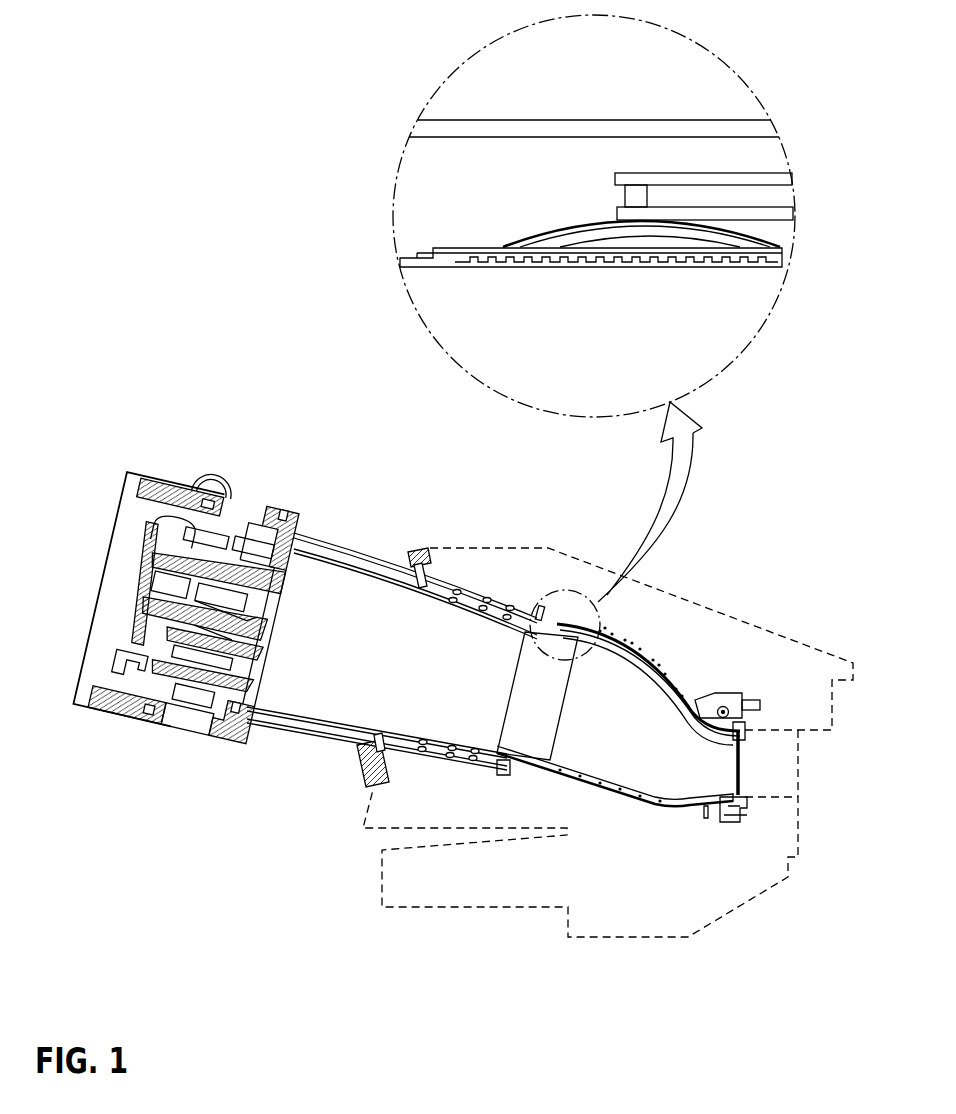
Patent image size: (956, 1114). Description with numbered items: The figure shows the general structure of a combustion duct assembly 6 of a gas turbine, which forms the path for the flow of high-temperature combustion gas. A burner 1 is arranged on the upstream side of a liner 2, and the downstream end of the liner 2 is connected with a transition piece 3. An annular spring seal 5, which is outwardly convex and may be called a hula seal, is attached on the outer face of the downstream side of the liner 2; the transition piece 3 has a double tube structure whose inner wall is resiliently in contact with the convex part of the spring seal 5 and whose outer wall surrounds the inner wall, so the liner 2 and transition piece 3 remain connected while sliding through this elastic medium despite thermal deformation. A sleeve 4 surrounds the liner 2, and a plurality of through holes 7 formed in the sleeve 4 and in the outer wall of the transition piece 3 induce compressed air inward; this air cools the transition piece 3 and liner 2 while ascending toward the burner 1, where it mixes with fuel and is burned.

The burner 1 is at (252, 505).
The liner 2 is at (374, 565).
The transition piece 3 is at (556, 622).
The sleeve 4 is at (589, 616).
The annular spring seal 5 is at (557, 234).
The combustion duct assembly 6 is at (550, 495).
The through holes 7 is at (605, 798).